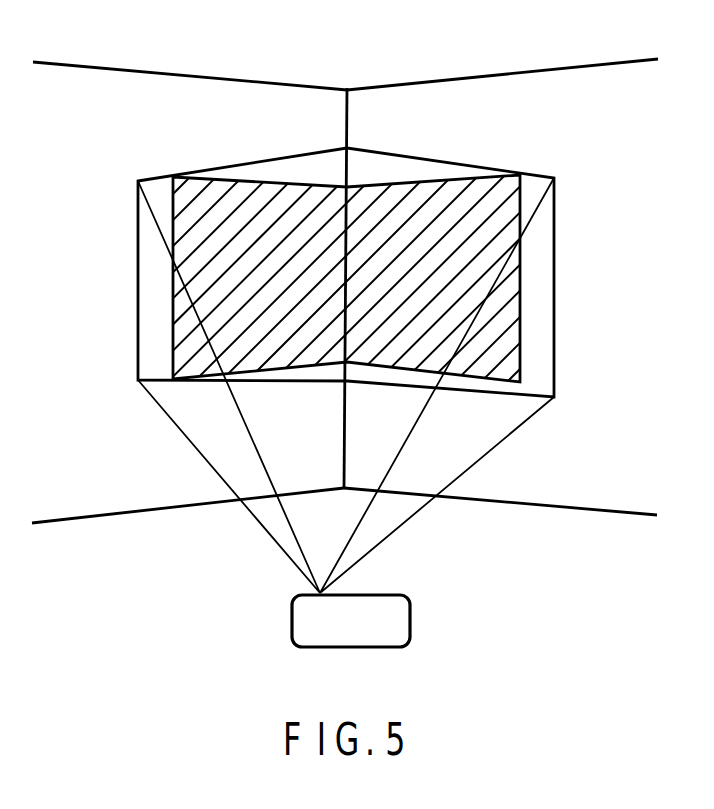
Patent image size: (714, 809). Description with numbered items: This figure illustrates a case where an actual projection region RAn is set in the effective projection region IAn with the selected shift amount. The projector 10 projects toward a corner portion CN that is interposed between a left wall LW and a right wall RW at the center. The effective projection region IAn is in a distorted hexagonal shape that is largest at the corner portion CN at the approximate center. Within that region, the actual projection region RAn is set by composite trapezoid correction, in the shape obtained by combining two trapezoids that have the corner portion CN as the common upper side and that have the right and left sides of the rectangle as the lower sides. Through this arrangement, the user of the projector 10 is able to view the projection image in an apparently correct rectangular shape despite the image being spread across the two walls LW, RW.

The left wall LW is at (150, 85).
The right wall RW is at (565, 80).
The corner portion CN is at (347, 120).
The effective projection region IAn is at (445, 162).
The actual projection region RAn is at (520, 292).
The projector 10 is at (410, 617).